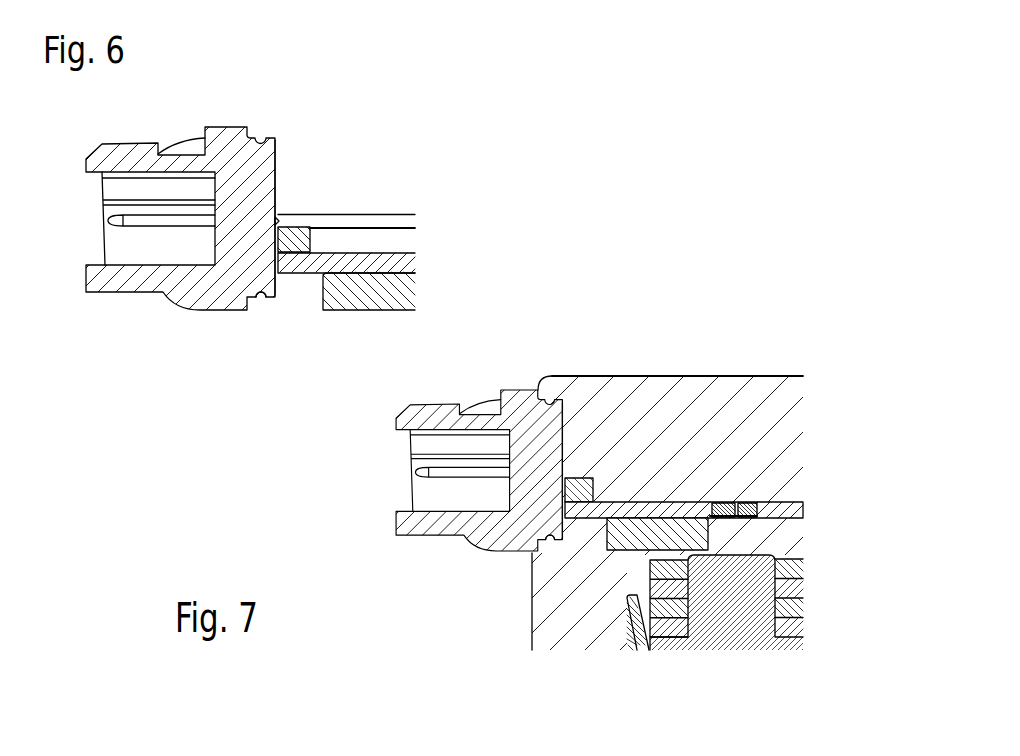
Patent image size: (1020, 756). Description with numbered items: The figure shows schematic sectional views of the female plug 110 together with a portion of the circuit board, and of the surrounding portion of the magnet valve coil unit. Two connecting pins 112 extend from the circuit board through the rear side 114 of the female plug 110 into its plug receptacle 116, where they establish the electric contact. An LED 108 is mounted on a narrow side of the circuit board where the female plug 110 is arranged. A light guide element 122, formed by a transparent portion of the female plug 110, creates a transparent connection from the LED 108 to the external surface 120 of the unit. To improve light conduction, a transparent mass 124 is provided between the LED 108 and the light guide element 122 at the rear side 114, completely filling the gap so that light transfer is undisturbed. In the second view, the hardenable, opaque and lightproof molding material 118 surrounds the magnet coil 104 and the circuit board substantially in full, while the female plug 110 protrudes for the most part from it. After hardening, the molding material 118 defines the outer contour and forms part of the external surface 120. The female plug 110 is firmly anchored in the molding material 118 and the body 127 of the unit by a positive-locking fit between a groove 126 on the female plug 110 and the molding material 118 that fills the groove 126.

In FIG. 7, the magnet coil 104 is at (793, 565).
In FIG. 6, the LED 108 is at (303, 212).
In FIG. 7, the LED 108 is at (570, 518).
In FIG. 6, the female plug 110 is at (69, 147).
In FIG. 7, the female plug 110 is at (378, 558).
In FIG. 6, the connecting pins 112 is at (127, 227).
In FIG. 7, the connecting pins 112 is at (478, 480).
In FIG. 6, the rear side 114 is at (279, 205).
In FIG. 7, the rear side 114 is at (564, 450).
In FIG. 6, the plug receptacle 116 is at (153, 250).
In FIG. 7, the plug receptacle 116 is at (428, 500).
In FIG. 7, the molding material 118 is at (775, 383).
In FIG. 7, the external surface 120 is at (703, 376).
In FIG. 6, the light guide element 122 is at (238, 248).
In FIG. 7, the light guide element 122 is at (547, 480).
In FIG. 6, the transparent mass 124 is at (293, 236).
In FIG. 7, the transparent mass 124 is at (572, 476).
In FIG. 6, the groove 126 is at (261, 300).
In FIG. 7, the groove 126 is at (552, 540).
In FIG. 7, the body 127 is at (749, 364).